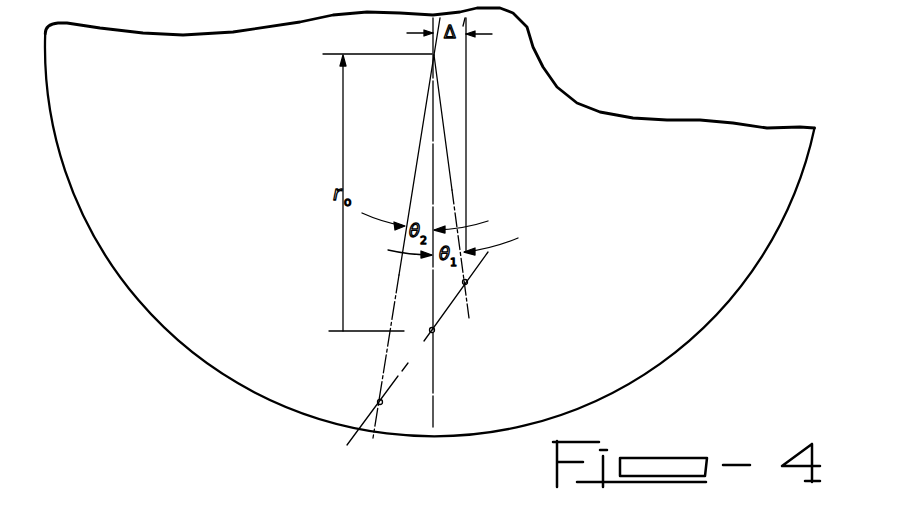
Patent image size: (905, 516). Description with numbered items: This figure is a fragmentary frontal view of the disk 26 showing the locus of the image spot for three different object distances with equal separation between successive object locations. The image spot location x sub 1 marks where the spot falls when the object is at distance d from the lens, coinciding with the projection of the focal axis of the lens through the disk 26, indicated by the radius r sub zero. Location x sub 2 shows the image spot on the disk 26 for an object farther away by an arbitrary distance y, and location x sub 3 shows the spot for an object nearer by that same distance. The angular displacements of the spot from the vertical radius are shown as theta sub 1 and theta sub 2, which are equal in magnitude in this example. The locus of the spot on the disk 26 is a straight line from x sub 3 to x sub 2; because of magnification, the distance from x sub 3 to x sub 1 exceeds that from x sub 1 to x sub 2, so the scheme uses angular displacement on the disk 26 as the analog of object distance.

The disk 26 is at (680, 198).
The point r1 on optical axis 1 is at (435, 332).
The point r2 2 is at (468, 282).
The point r3 3 is at (377, 402).